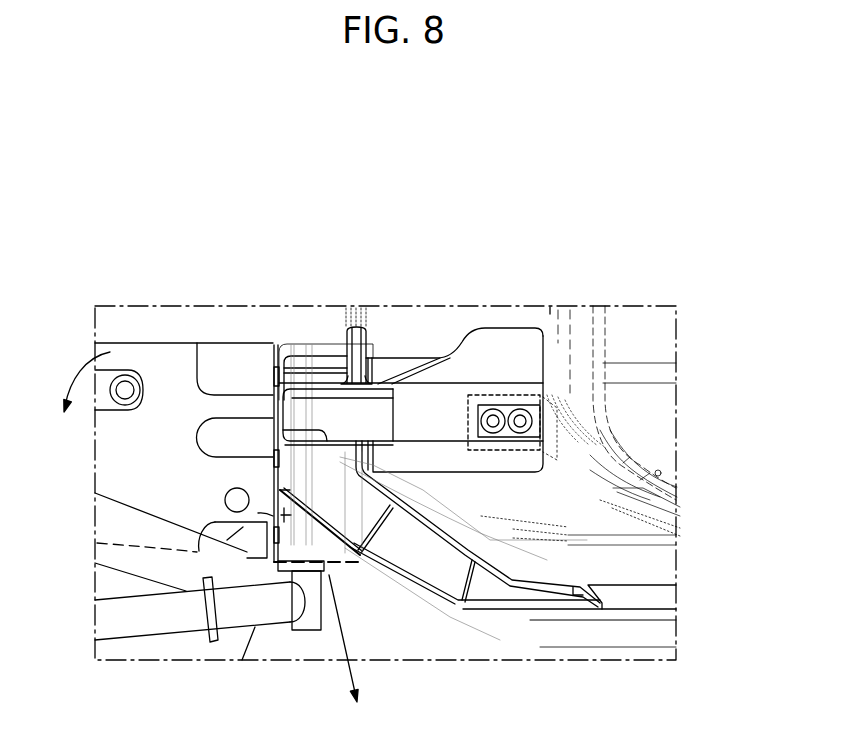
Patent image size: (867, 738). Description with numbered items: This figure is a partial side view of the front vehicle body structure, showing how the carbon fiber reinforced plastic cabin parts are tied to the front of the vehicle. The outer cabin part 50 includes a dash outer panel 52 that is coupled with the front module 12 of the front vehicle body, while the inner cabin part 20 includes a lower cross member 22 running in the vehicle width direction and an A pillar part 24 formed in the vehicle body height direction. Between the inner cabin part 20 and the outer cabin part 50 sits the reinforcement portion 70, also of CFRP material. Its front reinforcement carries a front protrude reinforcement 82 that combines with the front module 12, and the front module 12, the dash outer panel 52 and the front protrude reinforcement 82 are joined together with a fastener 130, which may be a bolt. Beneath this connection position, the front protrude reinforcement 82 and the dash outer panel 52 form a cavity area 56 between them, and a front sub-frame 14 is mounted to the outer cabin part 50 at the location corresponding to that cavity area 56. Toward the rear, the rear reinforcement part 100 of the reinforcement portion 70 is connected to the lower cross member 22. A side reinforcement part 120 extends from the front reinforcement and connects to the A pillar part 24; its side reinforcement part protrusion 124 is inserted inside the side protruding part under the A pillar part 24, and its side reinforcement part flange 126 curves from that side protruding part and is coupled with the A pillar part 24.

The front module 12 is at (147, 352).
The front sub-frame 14 is at (311, 630).
The inner cabin part 20 is at (530, 214).
The lower cross member 22 is at (637, 600).
The A pillar part 24 is at (540, 322).
The outer cabin part 50 is at (352, 581).
The dash outer panel 52 is at (278, 343).
The cavity area 56 is at (97, 543).
The reinforcement portion 70 is at (409, 345).
The front protrude reinforcement 82 is at (297, 356).
The rear reinforcement part 100 is at (528, 620).
The side reinforcement part 120 is at (523, 484).
The side reinforcement part protrusion 124 is at (433, 412).
The side reinforcement part flange 126 is at (502, 360).
The fastener 130 is at (273, 377).